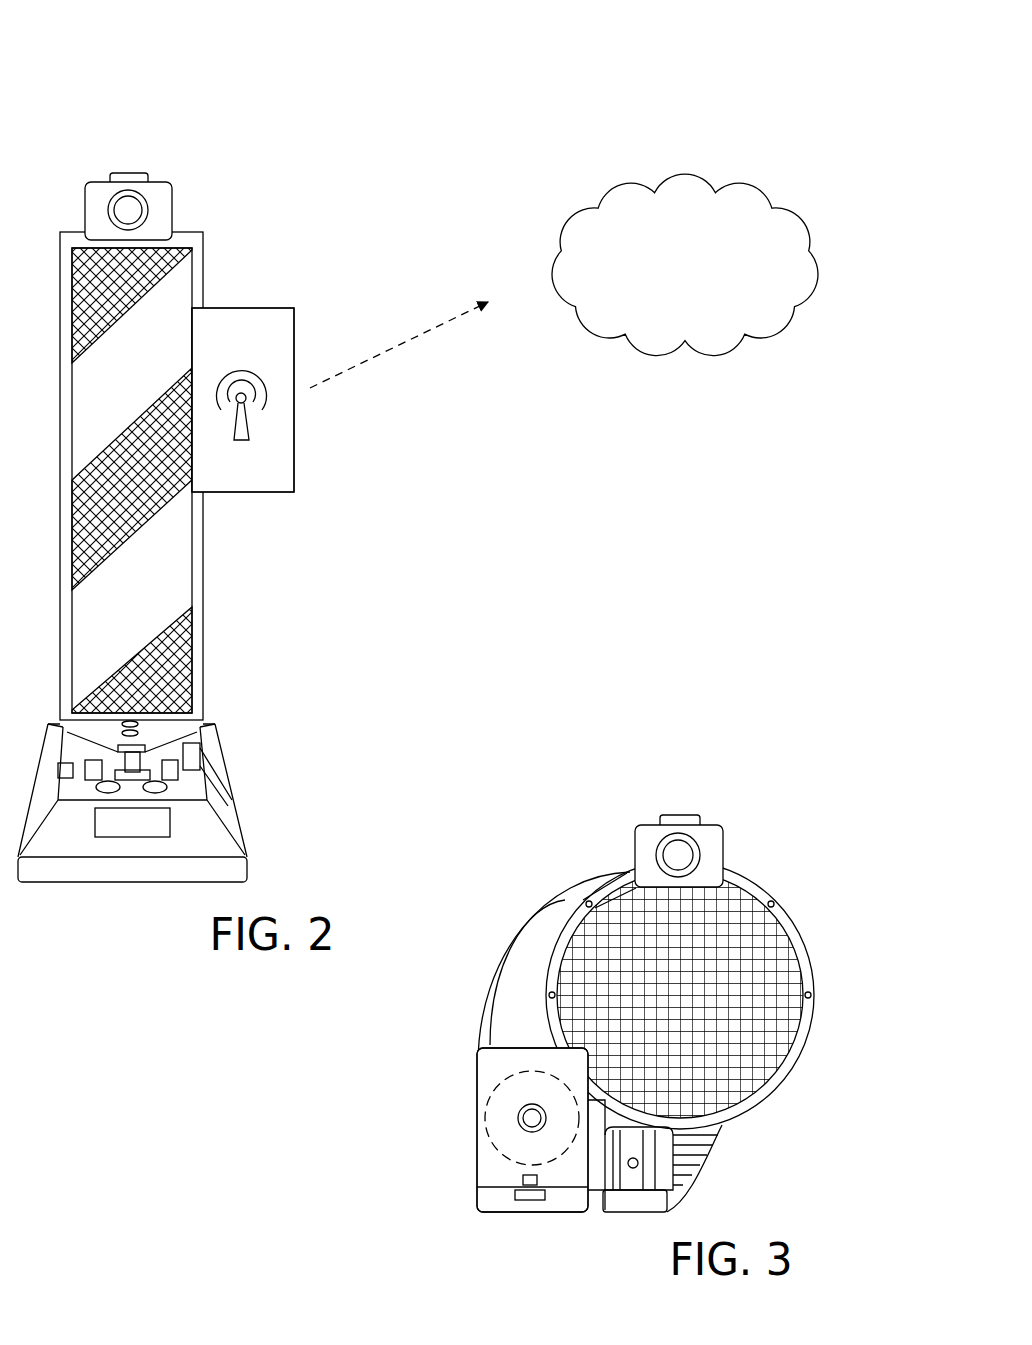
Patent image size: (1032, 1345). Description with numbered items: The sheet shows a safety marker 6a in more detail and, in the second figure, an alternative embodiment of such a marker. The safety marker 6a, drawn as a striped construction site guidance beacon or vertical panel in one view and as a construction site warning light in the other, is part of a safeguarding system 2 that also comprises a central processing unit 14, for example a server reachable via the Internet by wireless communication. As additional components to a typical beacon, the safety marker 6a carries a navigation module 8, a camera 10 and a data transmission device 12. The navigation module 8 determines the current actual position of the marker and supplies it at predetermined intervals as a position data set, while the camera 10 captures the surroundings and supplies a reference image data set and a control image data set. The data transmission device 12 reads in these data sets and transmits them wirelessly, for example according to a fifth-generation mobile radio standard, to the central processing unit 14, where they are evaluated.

In FIG. 2, the safeguarding system 2 is at (752, 116).
In FIG. 2, the safety marker 6a is at (340, 254).
In FIG. 3, the safety marker 6a is at (850, 860).
In FIG. 2, the navigation module 8 is at (244, 307).
In FIG. 3, the navigation module 8 is at (528, 1203).
In FIG. 2, the camera 10 is at (130, 172).
In FIG. 3, the camera 10 is at (645, 855).
In FIG. 2, the data transmission device 12 is at (270, 494).
In FIG. 3, the data transmission device 12 is at (532, 1130).
In FIG. 2, the central processing unit 14 is at (686, 358).